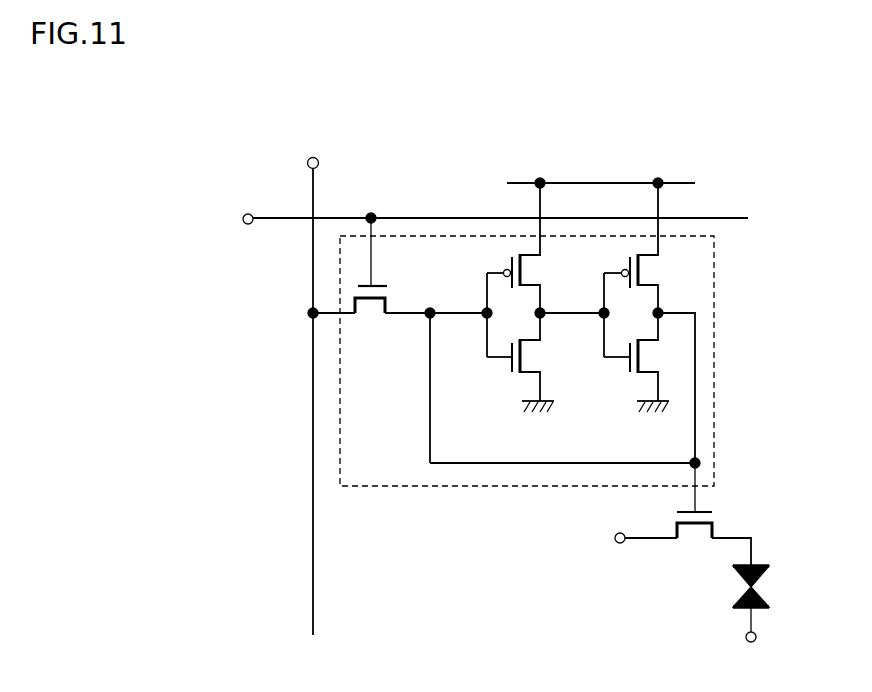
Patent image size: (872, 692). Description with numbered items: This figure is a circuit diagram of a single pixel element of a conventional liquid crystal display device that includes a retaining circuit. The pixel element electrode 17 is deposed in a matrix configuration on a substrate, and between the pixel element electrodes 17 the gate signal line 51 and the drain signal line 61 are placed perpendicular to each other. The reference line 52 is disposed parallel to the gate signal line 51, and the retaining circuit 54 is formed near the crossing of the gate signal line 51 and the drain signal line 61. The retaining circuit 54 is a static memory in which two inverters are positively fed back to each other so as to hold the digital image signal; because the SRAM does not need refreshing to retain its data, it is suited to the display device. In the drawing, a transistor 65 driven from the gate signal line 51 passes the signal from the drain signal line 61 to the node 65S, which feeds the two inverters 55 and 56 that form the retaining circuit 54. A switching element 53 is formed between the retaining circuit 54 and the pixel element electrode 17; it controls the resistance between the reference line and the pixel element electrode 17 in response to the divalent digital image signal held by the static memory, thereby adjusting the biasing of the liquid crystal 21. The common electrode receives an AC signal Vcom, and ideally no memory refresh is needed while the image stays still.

The drain signal line 61 is at (311, 183).
The gate signal line 51 is at (411, 216).
The reference line 52 is at (634, 180).
The retaining circuit 54 is at (716, 273).
The switching transistor 65 is at (369, 320).
The node of switching transistor 65S is at (402, 312).
The first inverter 55 is at (504, 379).
The second inverter 56 is at (619, 379).
The switching element 53 is at (723, 532).
The pixel element electrode 17 is at (757, 563).
The liquid crystal 21 is at (762, 588).